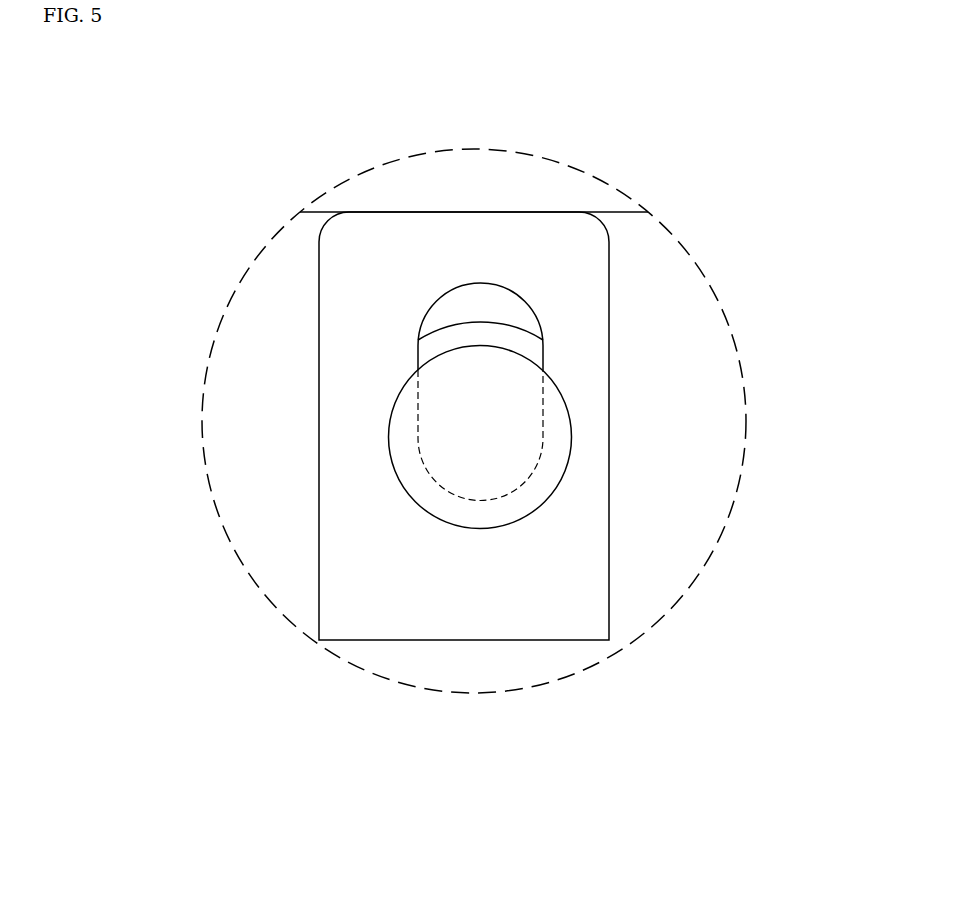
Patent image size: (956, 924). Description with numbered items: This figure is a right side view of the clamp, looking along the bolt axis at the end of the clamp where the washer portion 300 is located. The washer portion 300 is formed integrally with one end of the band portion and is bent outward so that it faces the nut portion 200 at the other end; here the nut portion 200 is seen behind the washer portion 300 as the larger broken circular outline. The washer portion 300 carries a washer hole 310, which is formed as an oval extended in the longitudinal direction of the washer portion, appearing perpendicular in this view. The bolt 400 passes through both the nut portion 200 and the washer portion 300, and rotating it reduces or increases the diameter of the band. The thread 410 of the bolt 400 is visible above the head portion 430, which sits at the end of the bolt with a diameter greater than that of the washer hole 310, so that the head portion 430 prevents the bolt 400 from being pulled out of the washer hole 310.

The nut portion 200 is at (693, 417).
The washer portion 300 is at (375, 313).
The washer hole 310 is at (418, 413).
The bolt 400 is at (611, 418).
The thread 410 is at (481, 337).
The head portion 430 is at (553, 465).